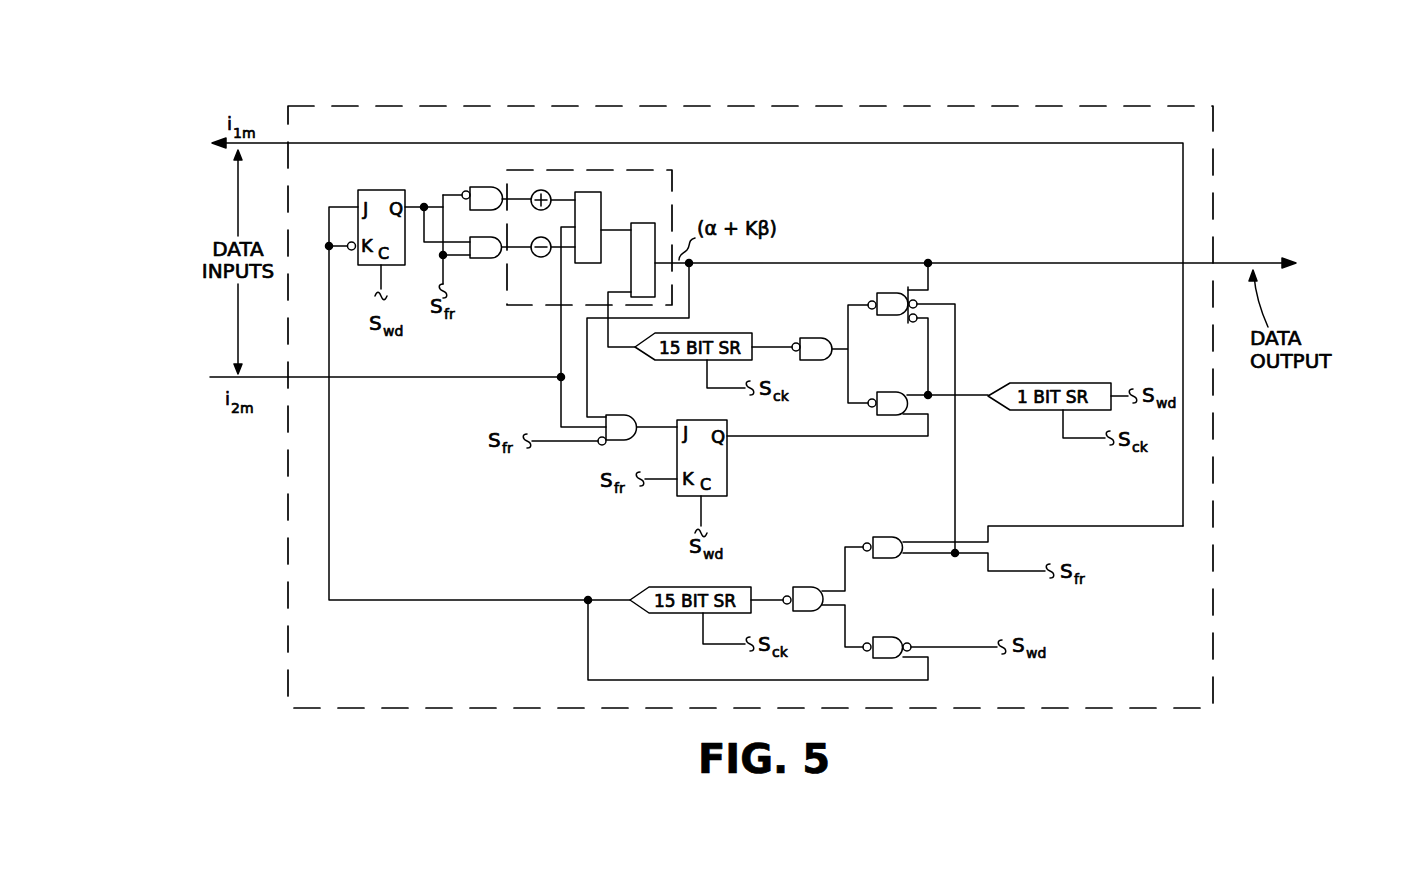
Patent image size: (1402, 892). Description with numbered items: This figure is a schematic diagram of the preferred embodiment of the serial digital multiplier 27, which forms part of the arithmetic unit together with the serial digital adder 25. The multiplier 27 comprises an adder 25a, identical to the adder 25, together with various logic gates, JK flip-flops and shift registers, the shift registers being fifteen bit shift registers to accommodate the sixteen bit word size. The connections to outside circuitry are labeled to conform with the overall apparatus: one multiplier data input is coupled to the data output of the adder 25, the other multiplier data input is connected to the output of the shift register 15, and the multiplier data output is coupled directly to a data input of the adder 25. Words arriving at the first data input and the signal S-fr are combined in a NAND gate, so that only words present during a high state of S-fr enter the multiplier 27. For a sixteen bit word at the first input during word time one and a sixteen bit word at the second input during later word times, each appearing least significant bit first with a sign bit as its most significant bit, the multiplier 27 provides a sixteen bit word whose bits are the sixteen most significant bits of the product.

The shift register 15 is at (333, 378).
The serial digital adder 25 is at (731, 323).
The adder 25a is at (675, 176).
The serial digital multiplier 27 is at (287, 657).